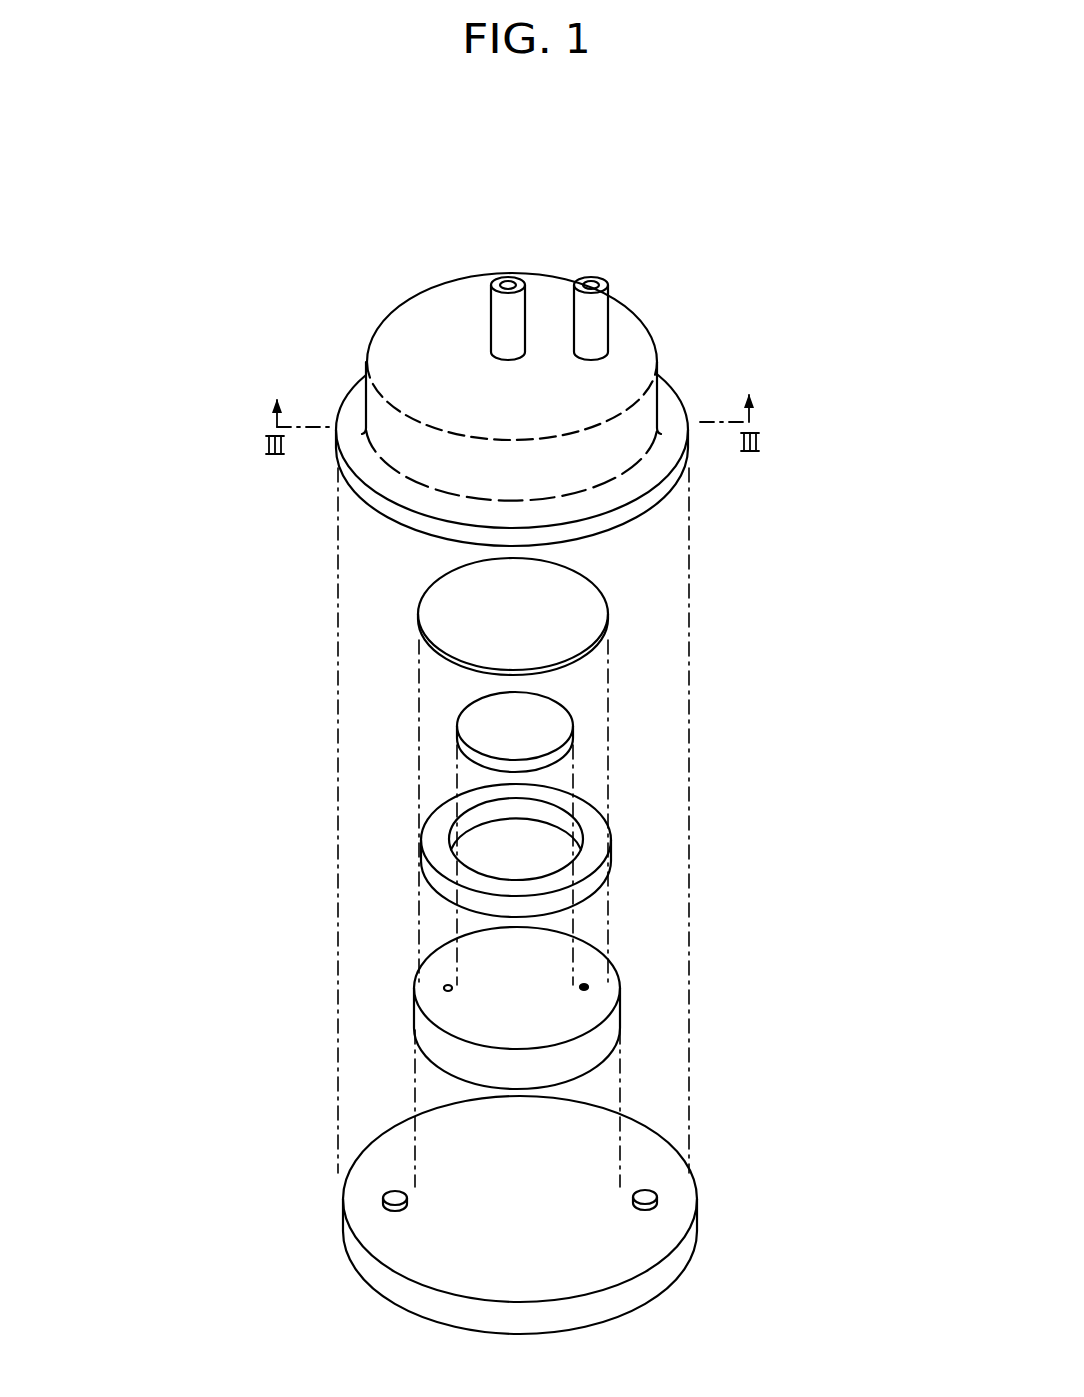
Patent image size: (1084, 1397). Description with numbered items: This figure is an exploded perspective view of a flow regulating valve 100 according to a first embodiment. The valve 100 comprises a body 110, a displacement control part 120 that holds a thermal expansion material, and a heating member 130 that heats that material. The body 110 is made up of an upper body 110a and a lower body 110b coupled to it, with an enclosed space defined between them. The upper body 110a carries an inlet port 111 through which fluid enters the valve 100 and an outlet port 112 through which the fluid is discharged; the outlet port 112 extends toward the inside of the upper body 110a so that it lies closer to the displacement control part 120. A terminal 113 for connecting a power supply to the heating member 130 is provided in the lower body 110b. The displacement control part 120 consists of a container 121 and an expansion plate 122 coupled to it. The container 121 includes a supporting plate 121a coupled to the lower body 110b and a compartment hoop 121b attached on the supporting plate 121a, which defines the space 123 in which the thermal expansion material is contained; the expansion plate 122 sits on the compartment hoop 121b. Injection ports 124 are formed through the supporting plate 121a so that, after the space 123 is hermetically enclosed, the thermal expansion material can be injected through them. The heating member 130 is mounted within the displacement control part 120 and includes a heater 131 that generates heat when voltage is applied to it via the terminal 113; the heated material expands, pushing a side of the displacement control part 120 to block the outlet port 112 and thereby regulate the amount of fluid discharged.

The flow regulating valve 100 is at (262, 294).
The body 110 is at (158, 806).
The upper body 110a is at (362, 488).
The lower body 110b is at (395, 1165).
The inlet port 111 is at (590, 281).
The outlet port 112 is at (508, 281).
The terminal 113 is at (650, 1194).
The displacement control part 120 is at (872, 889).
The container 121 is at (772, 920).
The supporting plate 121a is at (587, 963).
The compartment hoop 121b is at (590, 883).
The expansion plate 122 is at (588, 611).
The space 123 is at (549, 845).
The injection ports 124 is at (586, 986).
The heating member 130 is at (333, 743).
The heater 131 is at (480, 735).